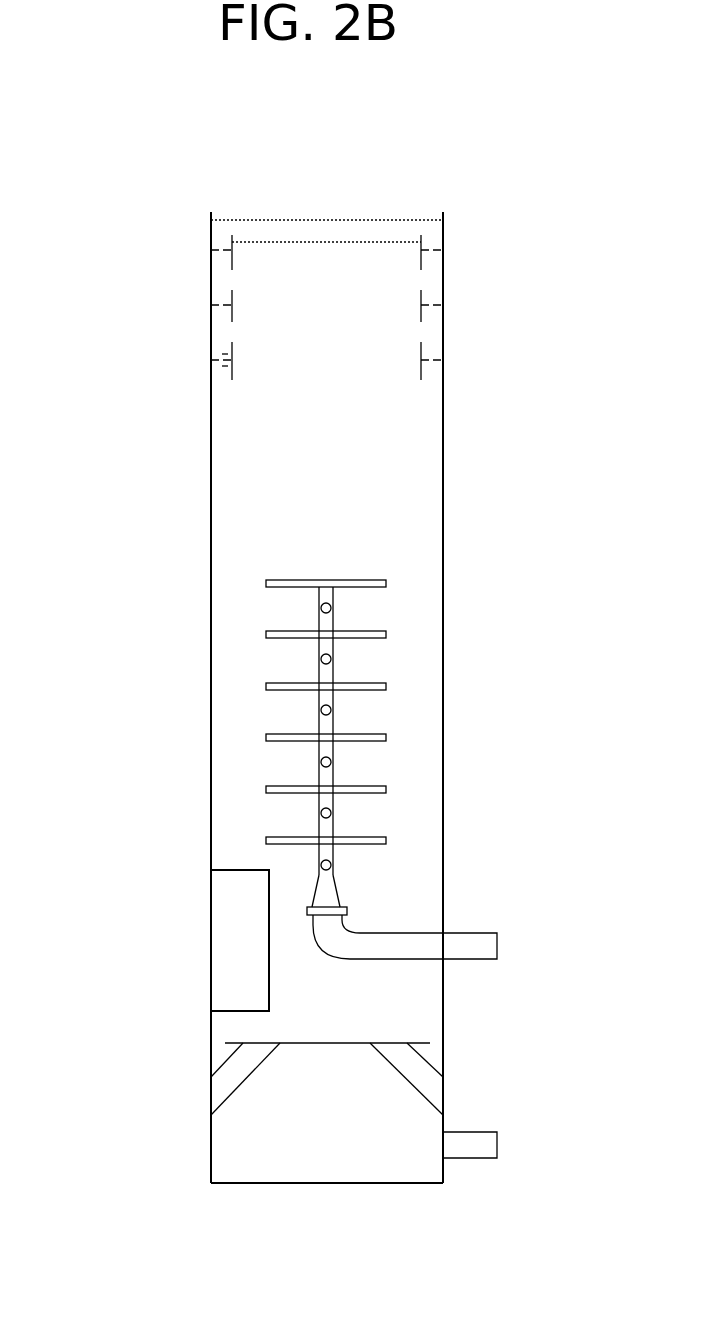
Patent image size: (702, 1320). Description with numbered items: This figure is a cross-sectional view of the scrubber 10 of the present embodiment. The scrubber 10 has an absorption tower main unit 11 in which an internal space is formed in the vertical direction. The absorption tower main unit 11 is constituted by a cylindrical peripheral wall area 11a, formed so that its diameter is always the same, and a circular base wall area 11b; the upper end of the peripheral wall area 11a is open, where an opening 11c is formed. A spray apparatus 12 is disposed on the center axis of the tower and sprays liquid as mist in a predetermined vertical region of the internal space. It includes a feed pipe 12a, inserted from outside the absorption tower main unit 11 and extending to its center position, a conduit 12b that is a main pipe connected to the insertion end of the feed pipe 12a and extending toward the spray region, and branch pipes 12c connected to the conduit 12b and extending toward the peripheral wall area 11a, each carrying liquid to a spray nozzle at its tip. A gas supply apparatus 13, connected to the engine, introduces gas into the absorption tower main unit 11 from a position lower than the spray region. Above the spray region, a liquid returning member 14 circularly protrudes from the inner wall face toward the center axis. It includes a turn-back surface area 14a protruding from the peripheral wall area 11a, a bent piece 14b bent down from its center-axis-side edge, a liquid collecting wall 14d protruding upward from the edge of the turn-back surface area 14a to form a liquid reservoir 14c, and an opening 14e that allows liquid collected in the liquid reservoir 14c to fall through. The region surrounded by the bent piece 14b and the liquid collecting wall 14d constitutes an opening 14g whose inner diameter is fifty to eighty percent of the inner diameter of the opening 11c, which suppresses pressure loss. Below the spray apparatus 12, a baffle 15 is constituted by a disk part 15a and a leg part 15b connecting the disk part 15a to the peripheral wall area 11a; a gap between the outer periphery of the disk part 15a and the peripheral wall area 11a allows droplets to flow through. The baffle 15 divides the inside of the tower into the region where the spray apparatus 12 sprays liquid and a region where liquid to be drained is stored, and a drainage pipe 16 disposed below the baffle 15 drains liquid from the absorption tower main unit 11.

The scrubber 10 is at (86, 233).
The absorption tower main unit 11 is at (378, 667).
The peripheral wall area 11a is at (213, 492).
The base wall area 11b is at (258, 1183).
The opening 11c is at (342, 212).
The spray apparatus 12 is at (400, 728).
The feed pipe 12a is at (465, 940).
The conduit 12b is at (334, 624).
The branch pipes 12c is at (291, 580).
The gas supply apparatus 13 is at (220, 958).
The liquid returning member 14 is at (287, 291).
The turn-back surface area 14a is at (228, 360).
The bent piece 14b is at (233, 372).
The liquid reservoir 14c is at (224, 351).
The liquid collecting wall 14d is at (236, 354).
The opening 14e is at (230, 368).
The opening 14g is at (278, 236).
The baffle 15 is at (370, 1061).
The disk part 15a is at (325, 1043).
The leg part 15b is at (422, 1076).
The drainage pipe 16 is at (468, 1142).